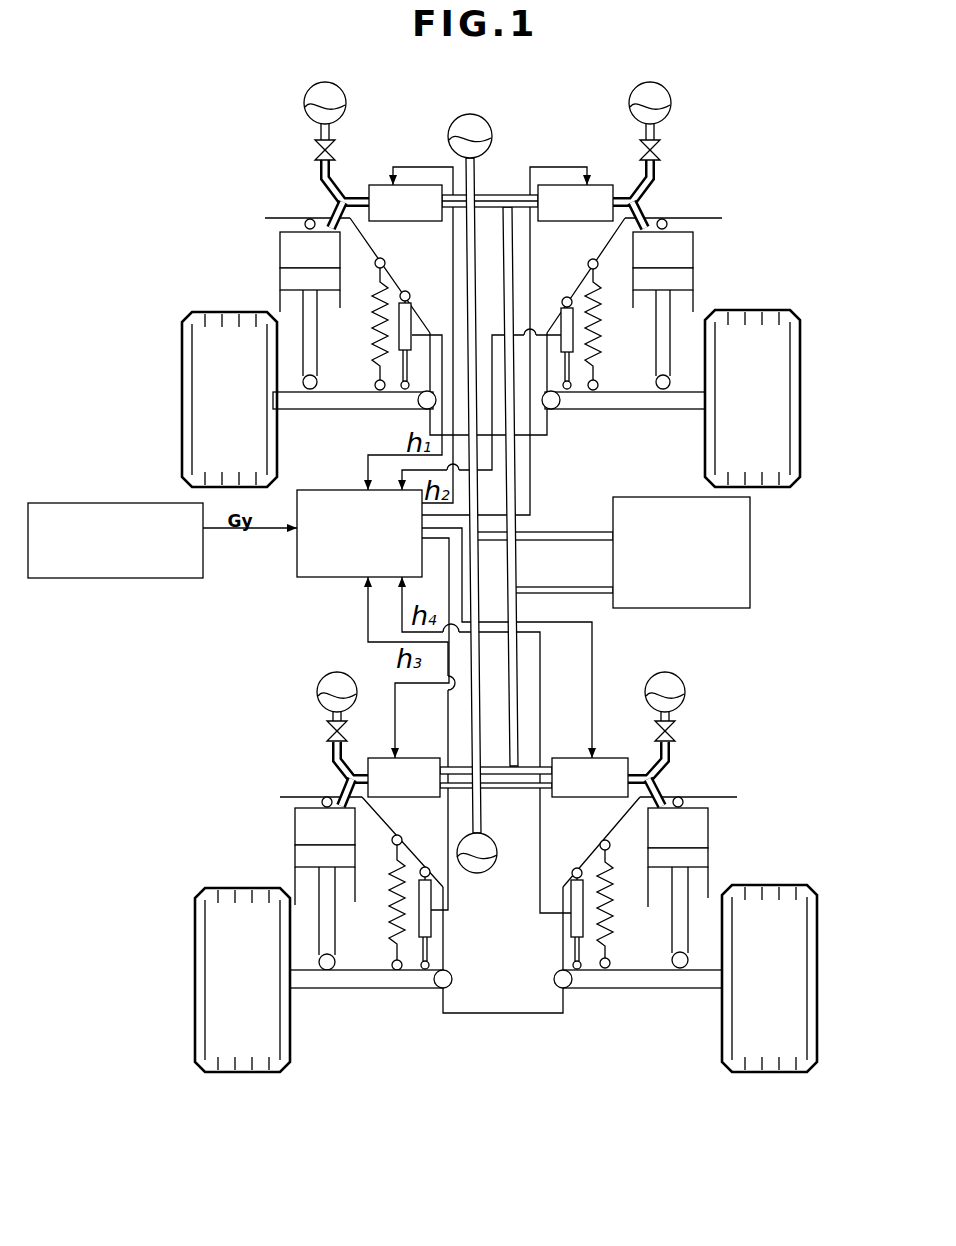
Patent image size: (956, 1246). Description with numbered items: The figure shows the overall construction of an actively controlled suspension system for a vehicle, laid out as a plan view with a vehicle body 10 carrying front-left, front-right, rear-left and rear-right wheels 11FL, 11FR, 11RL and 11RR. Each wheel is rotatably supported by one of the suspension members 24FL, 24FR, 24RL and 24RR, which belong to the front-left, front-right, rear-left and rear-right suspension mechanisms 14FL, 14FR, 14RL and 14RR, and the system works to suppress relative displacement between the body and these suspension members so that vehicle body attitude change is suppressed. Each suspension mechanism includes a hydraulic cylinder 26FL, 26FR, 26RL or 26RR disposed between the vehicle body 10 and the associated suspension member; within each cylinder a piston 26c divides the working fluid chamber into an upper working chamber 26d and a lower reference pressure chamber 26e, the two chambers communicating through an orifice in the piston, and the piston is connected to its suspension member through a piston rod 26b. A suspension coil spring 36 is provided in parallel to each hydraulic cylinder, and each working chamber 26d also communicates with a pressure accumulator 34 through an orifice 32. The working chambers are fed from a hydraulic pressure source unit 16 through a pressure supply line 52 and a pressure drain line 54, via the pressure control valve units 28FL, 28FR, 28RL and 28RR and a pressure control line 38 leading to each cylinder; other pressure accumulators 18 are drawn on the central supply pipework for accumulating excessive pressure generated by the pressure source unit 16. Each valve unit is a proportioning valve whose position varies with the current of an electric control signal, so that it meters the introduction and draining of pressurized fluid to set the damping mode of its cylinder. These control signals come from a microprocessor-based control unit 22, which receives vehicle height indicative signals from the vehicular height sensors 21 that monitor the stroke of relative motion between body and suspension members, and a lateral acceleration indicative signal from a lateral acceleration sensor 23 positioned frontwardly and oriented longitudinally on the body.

The vehicle body 10 is at (545, 436).
The front-left wheel 11FL is at (205, 378).
The front-right wheel 11FR is at (768, 352).
The rear-left wheel 11RL is at (218, 960).
The rear-right wheel 11RR is at (778, 1025).
The front-left suspension mechanism 14FL is at (278, 250).
The front-right suspension mechanism 14FR is at (695, 250).
The rear-left suspension mechanism 14RL is at (292, 838).
The rear-right suspension mechanism 14RR is at (712, 832).
The hydraulic pressure source unit 16 is at (752, 525).
The accumulator 18 is at (470, 116).
The vehicular height sensor 21 is at (410, 300).
The control unit 22 is at (330, 578).
The lateral acceleration sensor 23 is at (125, 503).
The front-left suspension member 24FL is at (370, 407).
The front-right suspension member 24FR is at (630, 410).
The rear-left suspension member 24RL is at (385, 990).
The rear-right suspension member 24RR is at (627, 990).
The front-left hydraulic cylinder 26FL is at (290, 227).
The front-right hydraulic cylinder 26FR is at (685, 227).
The rear-left hydraulic cylinder 26RL is at (305, 808).
The rear-right hydraulic cylinder 26RR is at (695, 806).
The piston rod 26b is at (305, 352).
The piston 26c is at (282, 298).
The upper working chamber 26d is at (337, 258).
The lower reference pressure chamber 26e is at (293, 313).
The front-left pressure control valve unit 28FL is at (382, 183).
The front-right pressure control valve unit 28FR is at (603, 183).
The rear-left pressure control valve unit 28RL is at (377, 753).
The rear-right pressure control valve unit 28RR is at (562, 751).
The orifice 32 is at (313, 150).
The pressure accumulator 34 is at (341, 91).
The suspension coil spring 36 is at (377, 323).
The pressure control line 38 is at (336, 206).
The pressure supply line 52 is at (566, 530).
The pressure drain line 54 is at (565, 586).